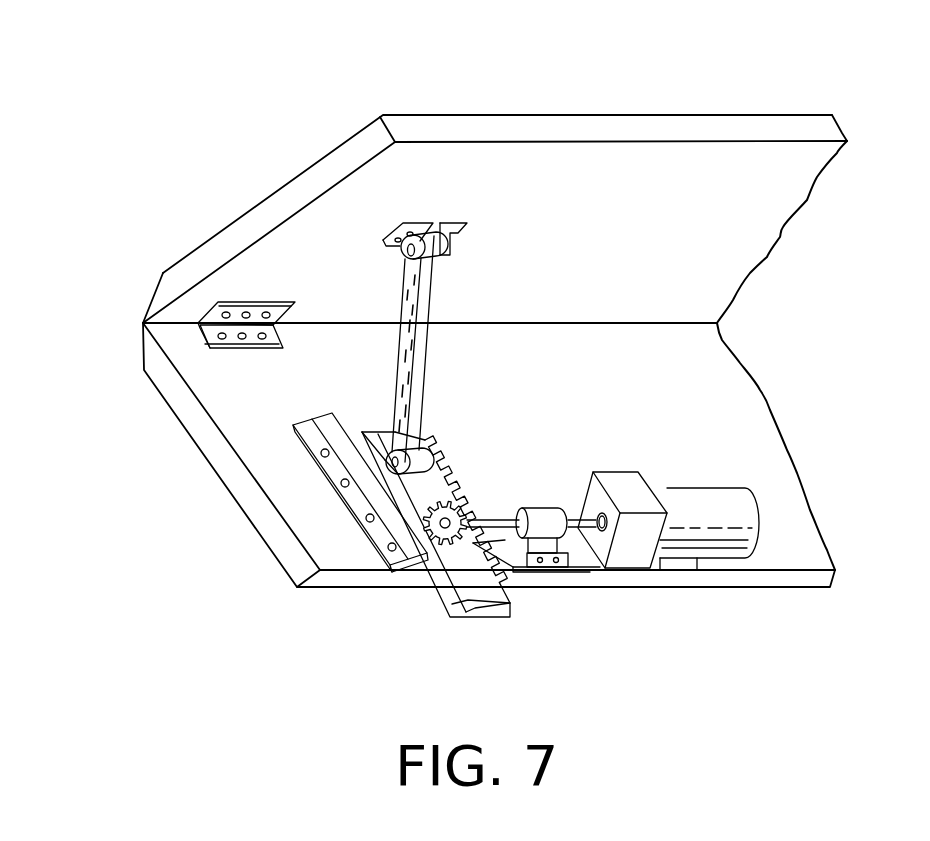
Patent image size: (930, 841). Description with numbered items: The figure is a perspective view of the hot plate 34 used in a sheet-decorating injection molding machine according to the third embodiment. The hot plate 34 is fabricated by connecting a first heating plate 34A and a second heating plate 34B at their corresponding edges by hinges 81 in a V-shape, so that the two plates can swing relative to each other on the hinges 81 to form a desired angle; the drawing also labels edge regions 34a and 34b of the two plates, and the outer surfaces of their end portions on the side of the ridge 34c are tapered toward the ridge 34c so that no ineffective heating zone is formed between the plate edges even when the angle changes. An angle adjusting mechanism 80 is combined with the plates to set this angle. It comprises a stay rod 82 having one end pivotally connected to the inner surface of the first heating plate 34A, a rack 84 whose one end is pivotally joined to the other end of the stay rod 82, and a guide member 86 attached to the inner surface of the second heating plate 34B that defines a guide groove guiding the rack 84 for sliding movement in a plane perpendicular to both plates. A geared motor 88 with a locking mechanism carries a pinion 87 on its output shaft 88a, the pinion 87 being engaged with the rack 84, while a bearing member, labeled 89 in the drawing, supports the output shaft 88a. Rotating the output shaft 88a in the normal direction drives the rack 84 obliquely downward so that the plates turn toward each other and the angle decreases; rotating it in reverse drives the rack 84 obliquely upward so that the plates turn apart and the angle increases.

The hot plate 34 is at (565, 113).
The first heating plate 34A is at (290, 190).
The upper edge of plate 34a is at (672, 113).
The second heating plate 34B is at (225, 462).
The front edge surface of lower panel 34b is at (257, 533).
The ridge 34c is at (140, 323).
The angle adjusting mechanism 80 is at (531, 422).
The hinges 81 is at (250, 345).
The stay rod 82 is at (436, 277).
The rack 84 is at (460, 580).
The guide member 86 is at (440, 453).
The pinion 87 is at (462, 508).
The geared motor 88 is at (697, 492).
The output shaft 88a is at (588, 545).
The bearing 89 is at (548, 510).